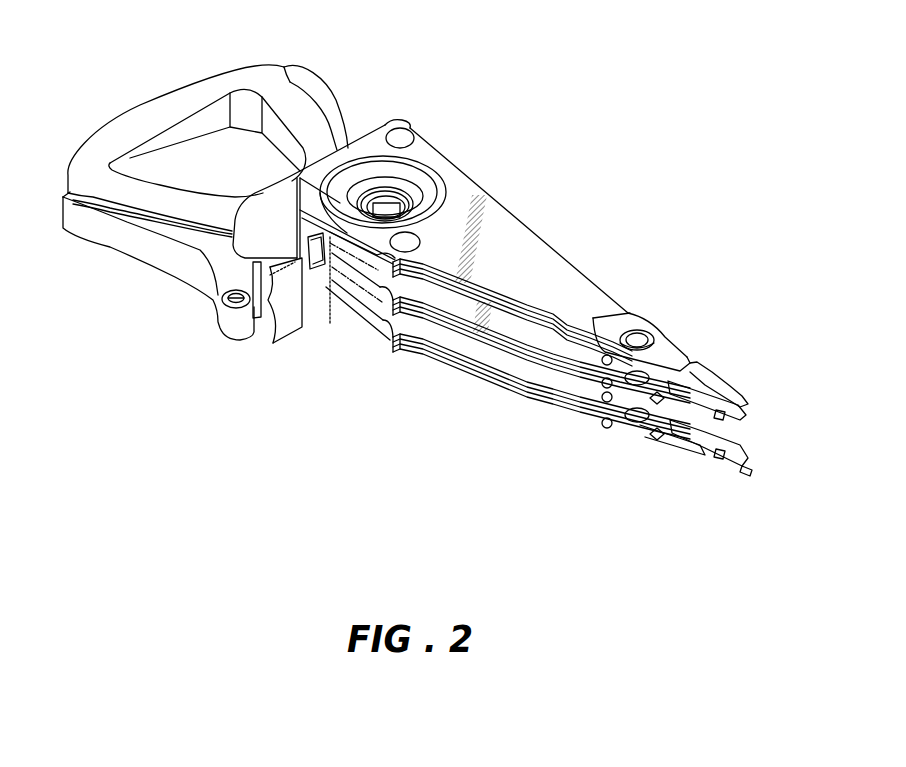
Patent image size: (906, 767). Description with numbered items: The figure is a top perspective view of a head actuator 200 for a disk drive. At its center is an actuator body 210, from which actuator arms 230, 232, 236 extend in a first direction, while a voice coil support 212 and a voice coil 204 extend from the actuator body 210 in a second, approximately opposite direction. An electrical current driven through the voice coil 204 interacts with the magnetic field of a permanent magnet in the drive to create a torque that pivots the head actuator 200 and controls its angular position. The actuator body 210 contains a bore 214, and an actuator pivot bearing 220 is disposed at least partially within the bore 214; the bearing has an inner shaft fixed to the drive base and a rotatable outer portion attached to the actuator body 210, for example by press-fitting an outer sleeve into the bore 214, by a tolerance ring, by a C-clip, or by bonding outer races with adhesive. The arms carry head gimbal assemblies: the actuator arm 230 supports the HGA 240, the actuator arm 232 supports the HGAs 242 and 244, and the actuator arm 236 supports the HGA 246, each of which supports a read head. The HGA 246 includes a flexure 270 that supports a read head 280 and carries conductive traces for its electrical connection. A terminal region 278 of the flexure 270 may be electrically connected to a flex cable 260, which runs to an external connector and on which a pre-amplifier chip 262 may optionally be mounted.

The head actuator 200 is at (466, 50).
The voice coil 204 is at (160, 103).
The voice coil support 212 is at (301, 84).
The actuator body 210 is at (370, 148).
The bore 214 is at (407, 167).
The actuator pivot bearing 220 is at (423, 203).
The actuator arm 230 is at (535, 262).
The actuator arm 232 is at (510, 325).
The actuator arm 236 is at (517, 363).
The head gimbal assembly 240 is at (702, 380).
The head gimbal assembly 242 is at (752, 432).
The head gimbal assembly 244 is at (757, 450).
The head gimbal assembly 246 is at (743, 470).
The flex cable 260 is at (285, 318).
The pre-amplifier chip 262 is at (318, 246).
The flexure 270 is at (627, 430).
The terminal region 278 is at (362, 313).
The read head 280 is at (700, 452).